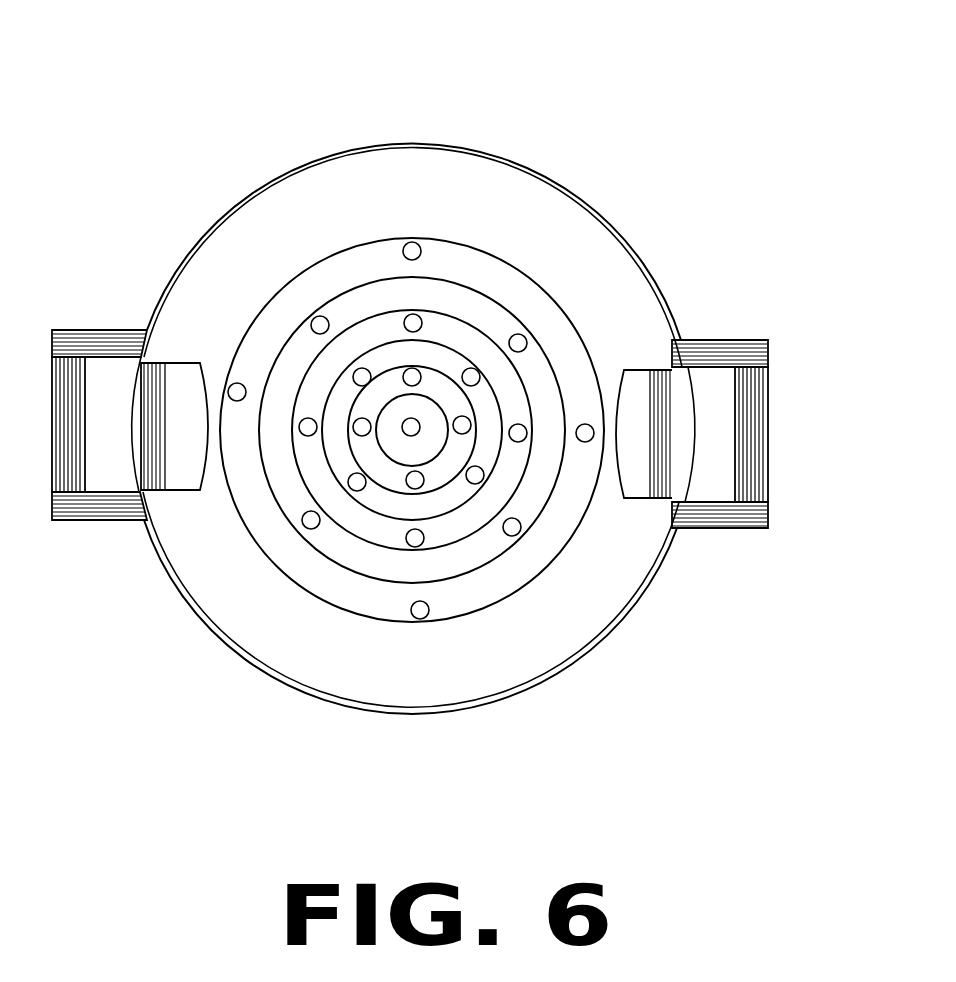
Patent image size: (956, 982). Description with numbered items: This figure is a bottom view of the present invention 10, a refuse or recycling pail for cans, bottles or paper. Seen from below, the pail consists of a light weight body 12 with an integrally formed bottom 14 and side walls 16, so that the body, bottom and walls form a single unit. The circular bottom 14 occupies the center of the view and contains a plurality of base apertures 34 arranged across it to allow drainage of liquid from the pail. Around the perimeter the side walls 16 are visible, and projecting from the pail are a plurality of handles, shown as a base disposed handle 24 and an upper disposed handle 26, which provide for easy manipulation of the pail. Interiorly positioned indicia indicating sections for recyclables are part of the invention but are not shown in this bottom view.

The present invention 10 is at (190, 158).
The light weight body 12 is at (503, 158).
The bottom 14 is at (368, 625).
The side walls 16 is at (590, 207).
The base handle 24 is at (670, 365).
The upper handle 26 is at (768, 433).
The base apertures 34 is at (321, 316).